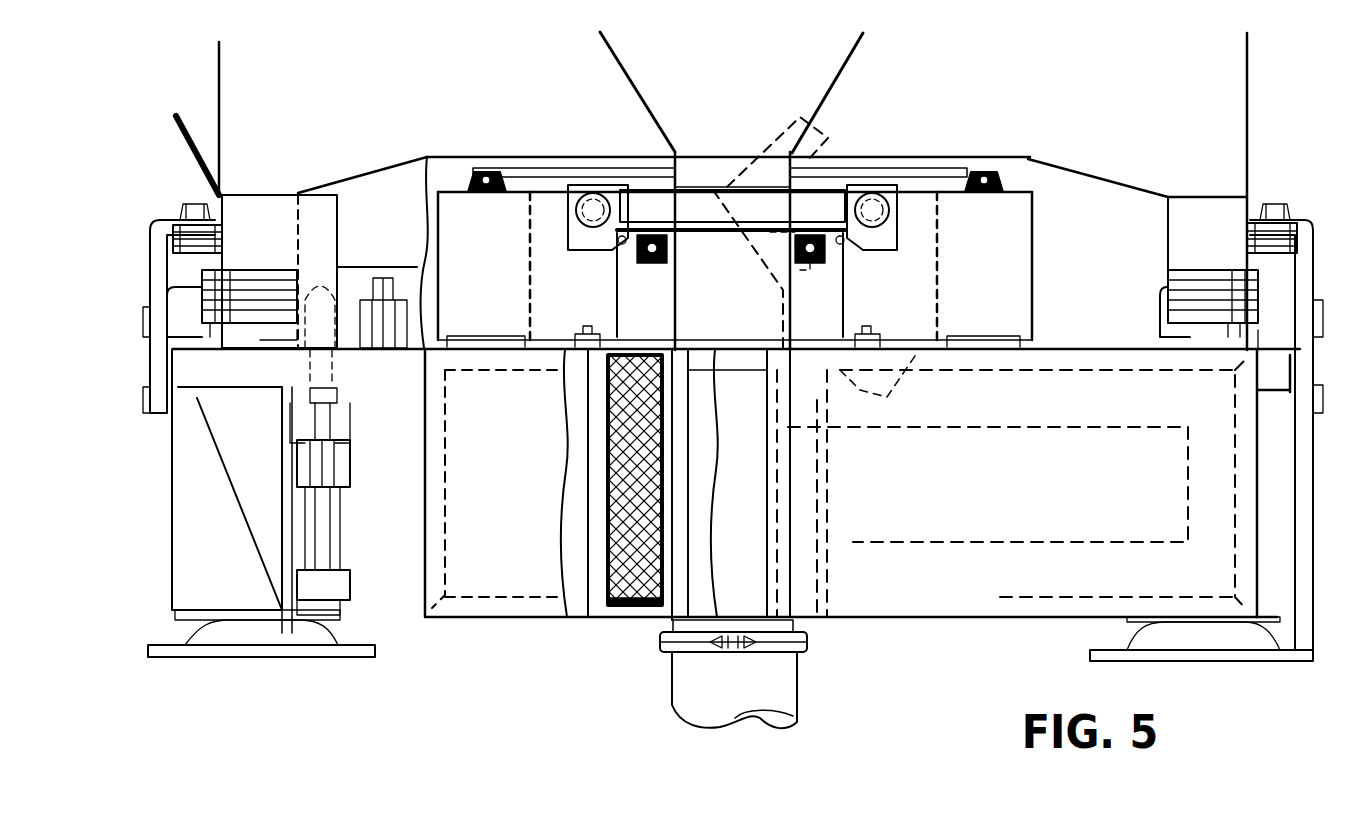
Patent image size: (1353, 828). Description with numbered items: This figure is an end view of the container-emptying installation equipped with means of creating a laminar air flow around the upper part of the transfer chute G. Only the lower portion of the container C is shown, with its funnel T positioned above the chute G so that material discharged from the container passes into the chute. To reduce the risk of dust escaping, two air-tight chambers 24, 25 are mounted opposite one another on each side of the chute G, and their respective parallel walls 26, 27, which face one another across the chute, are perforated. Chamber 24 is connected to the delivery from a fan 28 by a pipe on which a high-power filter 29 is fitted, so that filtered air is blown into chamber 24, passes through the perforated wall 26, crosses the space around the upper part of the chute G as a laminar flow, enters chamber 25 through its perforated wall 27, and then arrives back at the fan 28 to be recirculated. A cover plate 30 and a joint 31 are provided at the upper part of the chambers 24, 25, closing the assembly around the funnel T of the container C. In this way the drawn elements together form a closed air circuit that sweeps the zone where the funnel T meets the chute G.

The air-tight chamber 24 is at (450, 192).
The air-tight chamber 25 is at (1012, 235).
The perforated wall 26 is at (518, 225).
The perforated wall 27 is at (1015, 192).
The fan 28 is at (1020, 545).
The high-power filter 29 is at (638, 603).
The cover plate 30 is at (878, 172).
The joint 31 is at (488, 176).
The funnel T is at (836, 80).
The container C is at (1248, 105).
The transfer chute G is at (780, 687).